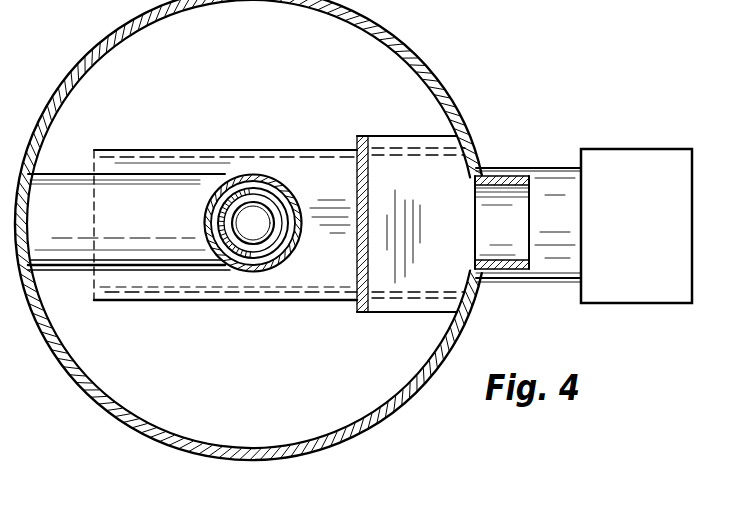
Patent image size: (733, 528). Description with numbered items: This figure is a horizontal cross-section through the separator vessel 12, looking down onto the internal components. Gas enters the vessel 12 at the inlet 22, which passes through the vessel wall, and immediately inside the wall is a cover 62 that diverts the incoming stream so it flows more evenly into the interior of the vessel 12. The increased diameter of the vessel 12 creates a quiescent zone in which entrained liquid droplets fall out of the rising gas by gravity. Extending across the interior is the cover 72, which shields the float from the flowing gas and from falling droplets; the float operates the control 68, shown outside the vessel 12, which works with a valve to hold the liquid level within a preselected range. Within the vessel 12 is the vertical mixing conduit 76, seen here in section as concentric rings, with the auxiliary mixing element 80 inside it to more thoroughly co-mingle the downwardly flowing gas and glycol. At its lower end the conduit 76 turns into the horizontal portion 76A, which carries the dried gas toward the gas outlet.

The vessel 12 is at (426, 62).
The inlet 22 is at (500, 176).
The cover 62 is at (370, 170).
The control 68 is at (638, 165).
The cover 72 is at (260, 282).
The vertical mixing conduit 76 is at (258, 176).
The horizontal portion 76A is at (138, 250).
The auxiliary mixing element 80 is at (272, 197).